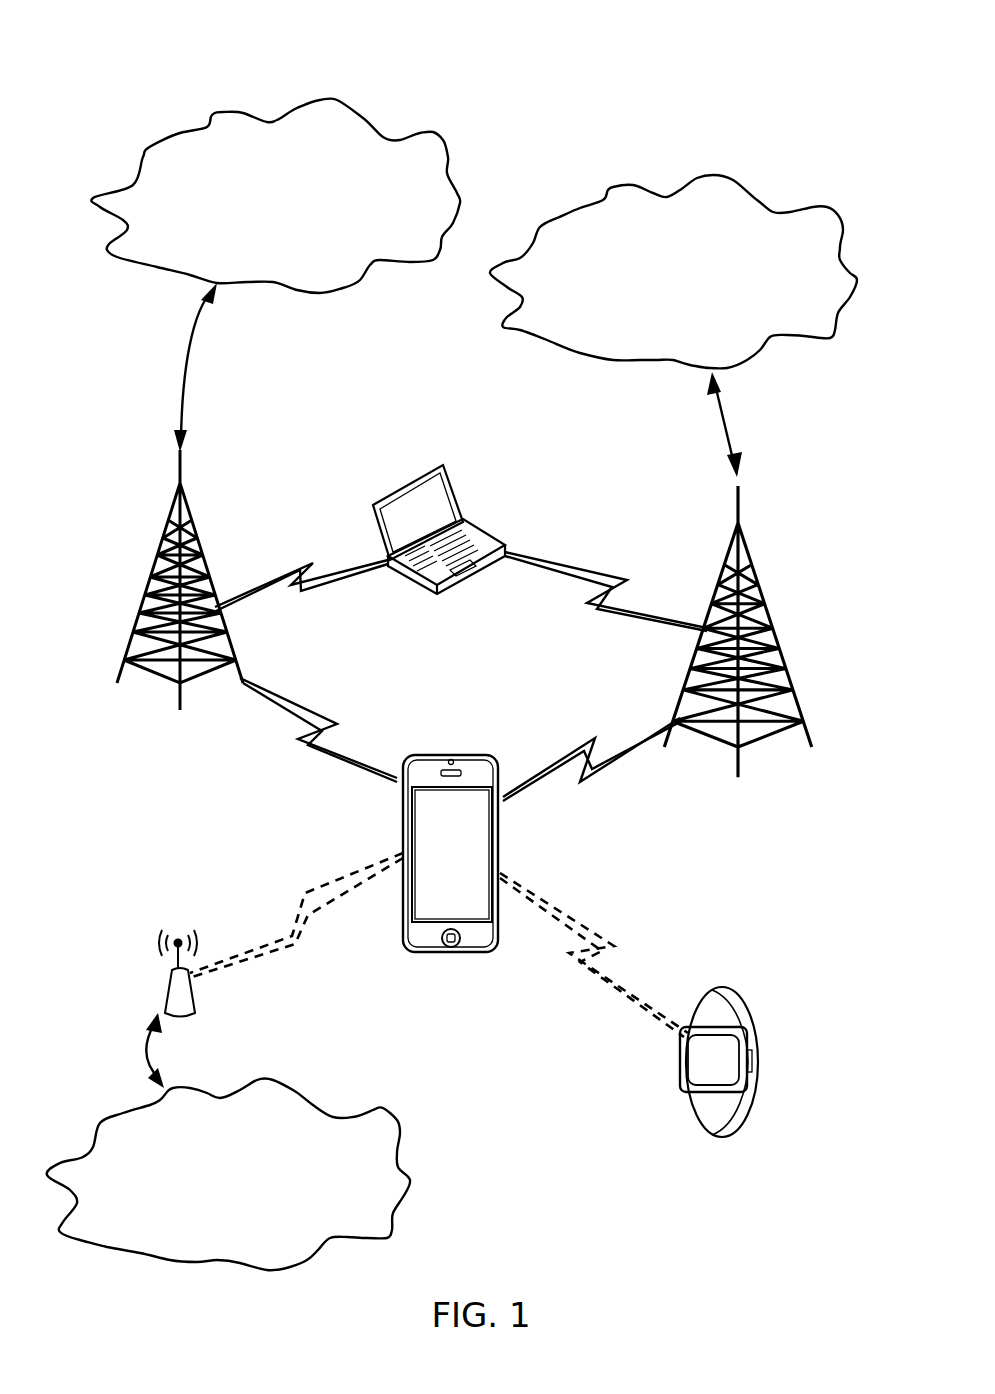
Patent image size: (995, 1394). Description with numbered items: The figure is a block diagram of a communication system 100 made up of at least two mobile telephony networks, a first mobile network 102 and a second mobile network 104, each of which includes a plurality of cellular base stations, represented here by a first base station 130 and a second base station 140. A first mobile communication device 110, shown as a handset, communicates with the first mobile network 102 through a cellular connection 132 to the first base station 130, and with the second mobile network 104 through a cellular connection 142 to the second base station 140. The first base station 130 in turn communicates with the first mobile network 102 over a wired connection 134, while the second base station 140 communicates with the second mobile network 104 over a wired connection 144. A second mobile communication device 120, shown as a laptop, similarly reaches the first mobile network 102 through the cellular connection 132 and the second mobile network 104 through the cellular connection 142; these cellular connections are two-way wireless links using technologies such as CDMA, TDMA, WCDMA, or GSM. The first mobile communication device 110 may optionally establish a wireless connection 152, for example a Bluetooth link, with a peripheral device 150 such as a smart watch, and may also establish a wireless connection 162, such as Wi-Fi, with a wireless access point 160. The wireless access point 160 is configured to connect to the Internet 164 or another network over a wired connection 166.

The communication system 100 is at (186, 62).
The first mobile network 102 is at (340, 296).
The second mobile network 104 is at (608, 186).
The first mobile communication device 110 is at (505, 838).
The second mobile communication device 120 is at (378, 498).
The first base station 130 is at (156, 577).
The cellular connection 132 is at (310, 562).
The wired connection 134 is at (183, 352).
The second base station 140 is at (728, 548).
The cellular connection 142 is at (555, 565).
The wired connection 144 is at (715, 420).
The peripheral device 150 is at (730, 990).
The wireless connection 152 is at (580, 920).
The wireless access point 160 is at (170, 983).
The wireless connection 162 is at (290, 890).
The Internet 164 is at (395, 1112).
The wired connection 166 is at (160, 1062).